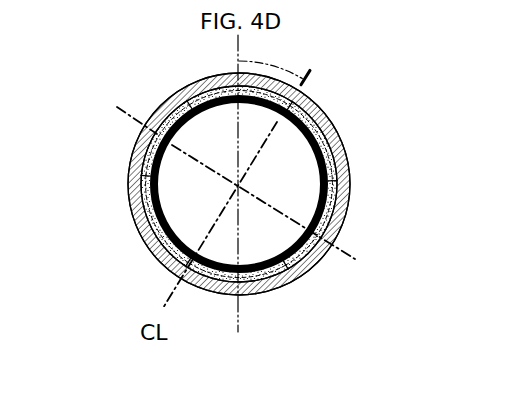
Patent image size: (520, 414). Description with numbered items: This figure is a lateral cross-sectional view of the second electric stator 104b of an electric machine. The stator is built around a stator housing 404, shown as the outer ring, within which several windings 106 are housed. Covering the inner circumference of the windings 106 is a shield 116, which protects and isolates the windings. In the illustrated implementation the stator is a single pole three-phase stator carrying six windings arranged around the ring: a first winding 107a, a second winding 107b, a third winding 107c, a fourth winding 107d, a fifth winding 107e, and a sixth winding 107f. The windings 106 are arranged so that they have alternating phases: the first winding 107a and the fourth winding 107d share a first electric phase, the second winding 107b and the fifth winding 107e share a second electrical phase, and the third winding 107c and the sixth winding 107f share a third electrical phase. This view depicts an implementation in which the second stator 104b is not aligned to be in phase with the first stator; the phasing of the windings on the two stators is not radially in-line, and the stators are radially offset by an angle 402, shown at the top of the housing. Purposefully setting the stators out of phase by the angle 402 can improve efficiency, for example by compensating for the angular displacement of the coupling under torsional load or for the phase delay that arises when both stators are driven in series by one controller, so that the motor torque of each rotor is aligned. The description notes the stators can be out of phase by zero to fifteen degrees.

The second electric stator 104b is at (108, 86).
The windings 106 is at (100, 161).
The first winding 107a is at (165, 103).
The second winding 107b is at (322, 116).
The third winding 107c is at (347, 213).
The fourth winding 107d is at (250, 282).
The fifth winding 107e is at (148, 243).
The sixth winding 107f is at (128, 176).
The shield 116 is at (290, 273).
The angle 402 is at (284, 68).
The stator housing 404 is at (347, 158).